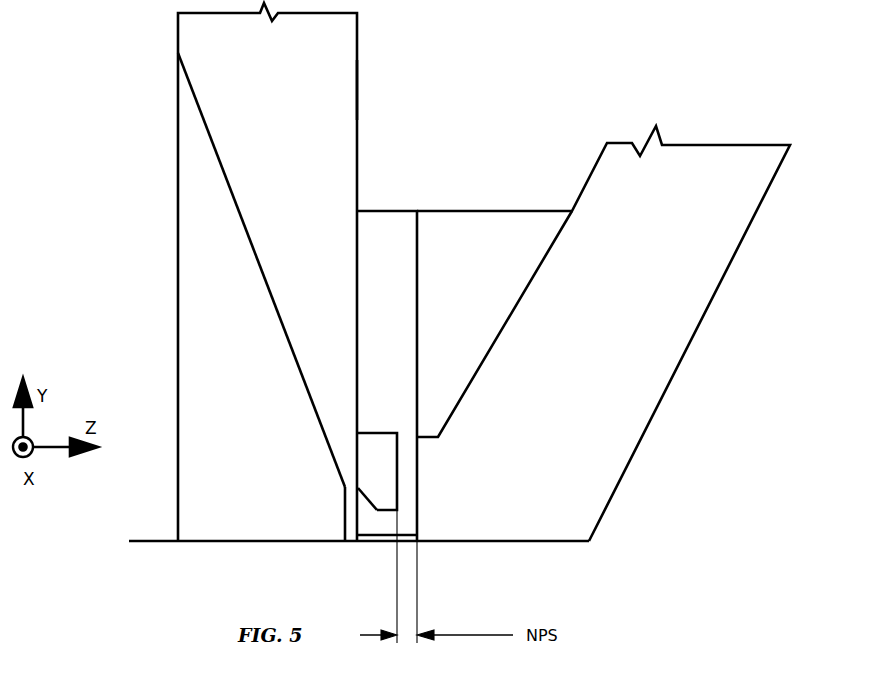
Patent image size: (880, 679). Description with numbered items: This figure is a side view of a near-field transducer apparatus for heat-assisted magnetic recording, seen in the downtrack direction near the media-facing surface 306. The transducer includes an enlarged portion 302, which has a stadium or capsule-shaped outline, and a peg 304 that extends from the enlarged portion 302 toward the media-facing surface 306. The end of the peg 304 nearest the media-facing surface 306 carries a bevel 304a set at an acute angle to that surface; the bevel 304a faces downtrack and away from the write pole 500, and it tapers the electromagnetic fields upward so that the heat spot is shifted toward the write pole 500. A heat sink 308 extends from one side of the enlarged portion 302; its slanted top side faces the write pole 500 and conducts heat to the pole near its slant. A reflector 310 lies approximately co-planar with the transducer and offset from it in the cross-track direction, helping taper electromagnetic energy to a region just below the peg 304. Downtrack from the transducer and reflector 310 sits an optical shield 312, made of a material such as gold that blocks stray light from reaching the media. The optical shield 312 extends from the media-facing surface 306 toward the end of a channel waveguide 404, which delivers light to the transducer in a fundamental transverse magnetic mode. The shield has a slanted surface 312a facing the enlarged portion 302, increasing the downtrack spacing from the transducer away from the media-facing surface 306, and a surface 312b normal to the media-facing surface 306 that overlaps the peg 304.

The enlarged portion 302 is at (395, 210).
The peg 304 is at (395, 493).
The bevel 304a is at (360, 496).
The media-facing surface 306 is at (468, 543).
The heat sink 308 is at (483, 225).
The reflector 310 is at (408, 519).
The optical shield 312 is at (188, 283).
The slanted surface 312a is at (247, 230).
The surface normal to the media-facing surface 312b is at (345, 520).
The channel waveguide 404 is at (350, 88).
The write pole 500 is at (562, 527).